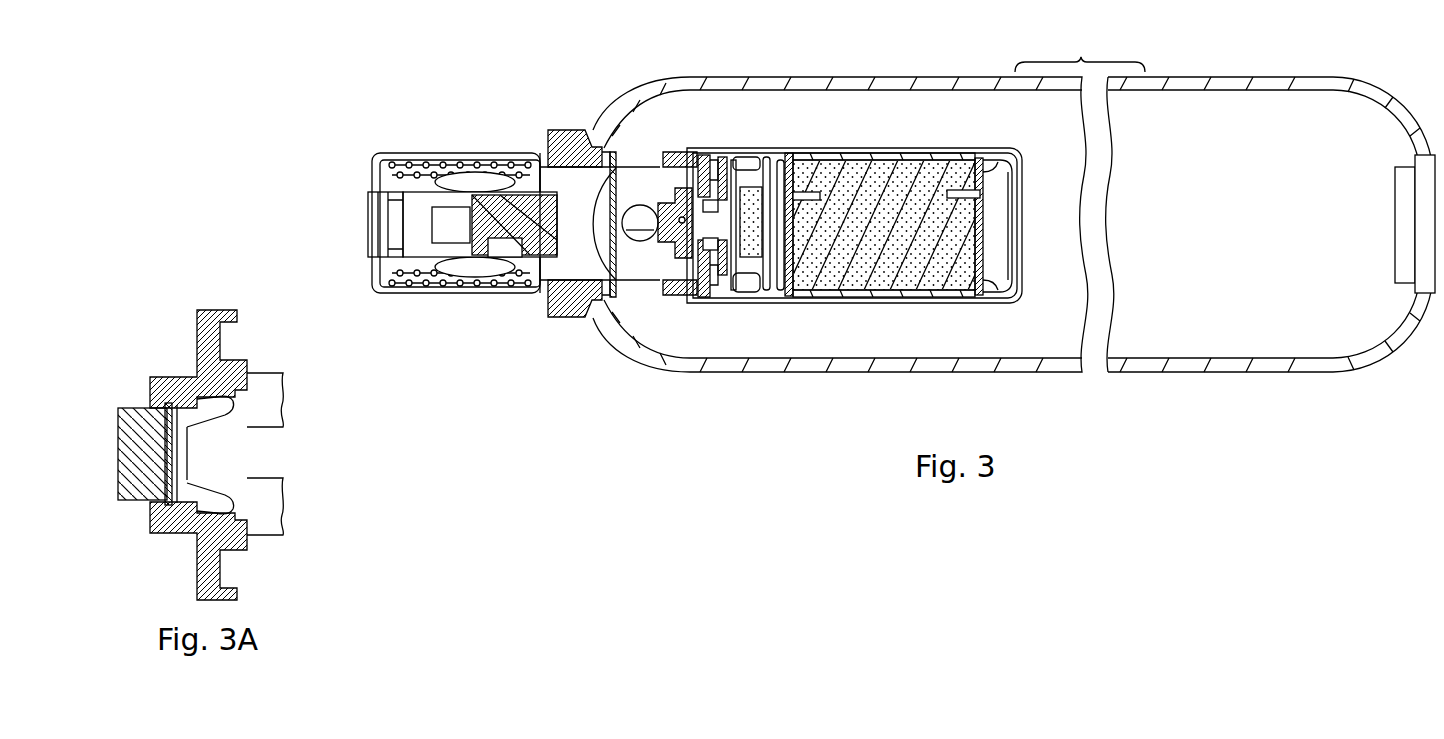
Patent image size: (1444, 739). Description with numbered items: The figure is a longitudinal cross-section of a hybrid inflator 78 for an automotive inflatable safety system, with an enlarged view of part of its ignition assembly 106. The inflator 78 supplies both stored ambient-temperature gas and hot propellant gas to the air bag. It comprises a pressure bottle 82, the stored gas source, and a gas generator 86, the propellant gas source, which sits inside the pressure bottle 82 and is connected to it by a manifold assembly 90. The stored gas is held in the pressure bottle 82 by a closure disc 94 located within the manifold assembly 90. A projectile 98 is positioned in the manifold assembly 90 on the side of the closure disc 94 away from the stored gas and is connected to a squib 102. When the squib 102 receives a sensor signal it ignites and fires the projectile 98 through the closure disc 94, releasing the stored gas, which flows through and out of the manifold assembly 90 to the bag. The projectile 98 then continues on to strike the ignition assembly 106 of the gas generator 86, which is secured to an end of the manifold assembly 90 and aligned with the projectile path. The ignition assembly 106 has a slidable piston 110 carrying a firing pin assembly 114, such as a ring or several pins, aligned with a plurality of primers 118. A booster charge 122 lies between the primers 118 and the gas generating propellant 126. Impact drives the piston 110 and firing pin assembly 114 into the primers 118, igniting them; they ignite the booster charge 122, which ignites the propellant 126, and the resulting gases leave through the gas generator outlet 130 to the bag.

In FIG. 3, the inflator 78 is at (1147, 77).
In FIG. 3, the pressure bottle 82 is at (830, 77).
In FIG. 3, the gas generator 86 is at (1003, 151).
In FIG. 3, the manifold assembly 90 is at (557, 130).
In FIG. 3, the closure disc 94 is at (590, 282).
In FIG. 3, the projectile 98 is at (493, 213).
In FIG. 3, the squib 102 is at (440, 223).
In FIG. 3, the ignition assembly 106 is at (638, 258).
In FIG. 3, the slidable piston 110 is at (672, 230).
In FIG. 3A, the slidable piston 110 is at (118, 427).
In FIG. 3, the firing pin assembly 114 is at (678, 187).
In FIG. 3A, the firing pin assembly 114 is at (233, 447).
In FIG. 3, the primers 118 is at (732, 172).
In FIG. 3A, the primers 118 is at (283, 400).
In FIG. 3, the booster charge 122 is at (757, 175).
In FIG. 3, the gas generating propellant 126 is at (902, 221).
In FIG. 3, the gas generator outlet 130 is at (1023, 210).